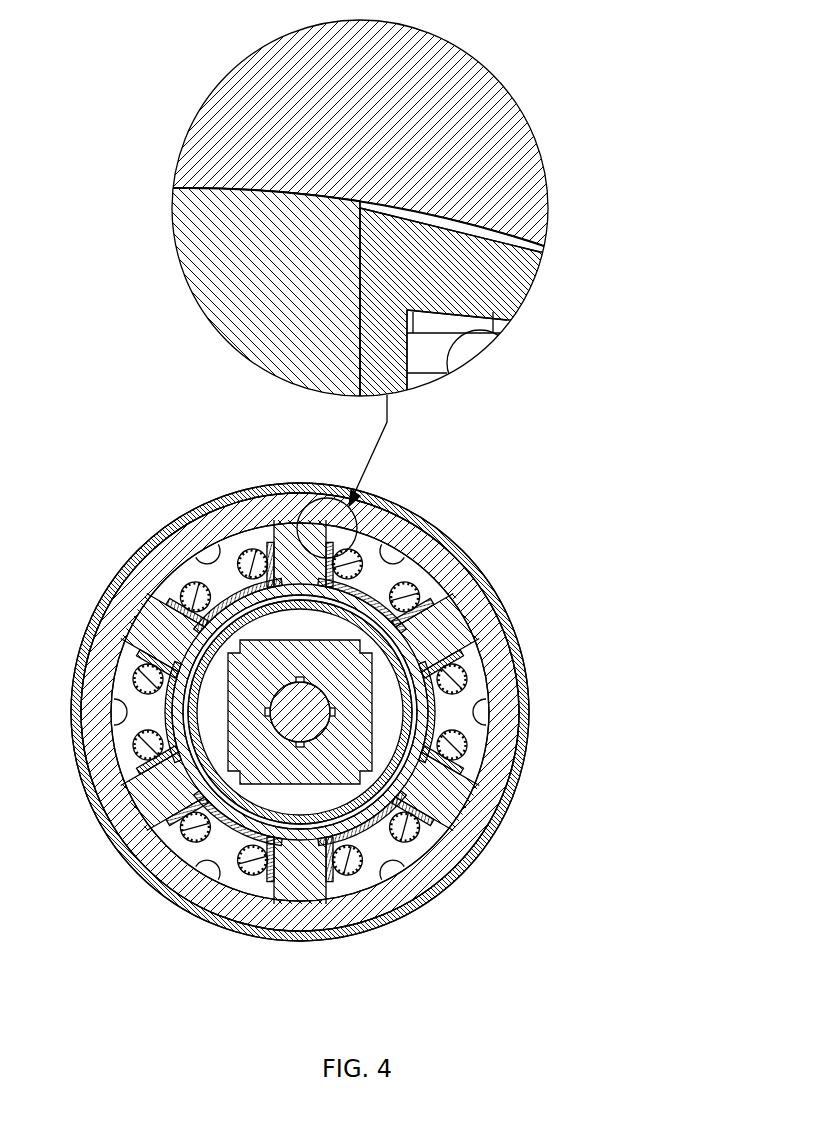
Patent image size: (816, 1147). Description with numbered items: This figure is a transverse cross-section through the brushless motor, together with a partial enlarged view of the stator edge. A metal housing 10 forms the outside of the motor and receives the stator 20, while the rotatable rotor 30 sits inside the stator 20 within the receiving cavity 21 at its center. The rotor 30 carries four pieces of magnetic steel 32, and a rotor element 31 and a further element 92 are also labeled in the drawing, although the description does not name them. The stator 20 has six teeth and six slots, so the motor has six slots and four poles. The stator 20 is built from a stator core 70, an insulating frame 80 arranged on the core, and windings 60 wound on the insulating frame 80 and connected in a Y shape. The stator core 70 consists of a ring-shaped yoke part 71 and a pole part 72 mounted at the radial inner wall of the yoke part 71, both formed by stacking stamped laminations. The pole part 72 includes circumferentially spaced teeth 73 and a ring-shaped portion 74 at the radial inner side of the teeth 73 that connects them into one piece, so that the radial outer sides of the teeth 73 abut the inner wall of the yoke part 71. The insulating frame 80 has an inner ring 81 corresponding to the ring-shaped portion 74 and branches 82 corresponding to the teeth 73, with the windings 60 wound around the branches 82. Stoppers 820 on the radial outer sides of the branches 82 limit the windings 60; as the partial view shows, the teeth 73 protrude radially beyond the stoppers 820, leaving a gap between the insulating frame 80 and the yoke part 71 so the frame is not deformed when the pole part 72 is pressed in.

The metal housing 10 is at (363, 923).
The stator 20 is at (389, 641).
The receiving cavity 21 is at (389, 604).
The rotor 30 is at (190, 706).
The outer ring wall 31 is at (395, 518).
The magnetic steel 32 is at (300, 705).
The stator windings 60 is at (273, 617).
The stator core 70 is at (640, 588).
The yoke part 71 is at (497, 707).
The pole part 72 is at (580, 577).
The teeth 73 is at (480, 600).
The ring-shaped portion 74 is at (478, 648).
The insulating frame 80 is at (618, 760).
The inner ring 81 is at (480, 737).
The branches 82 is at (402, 604).
The stoppers 820 is at (462, 858).
The pin 92 is at (430, 548).